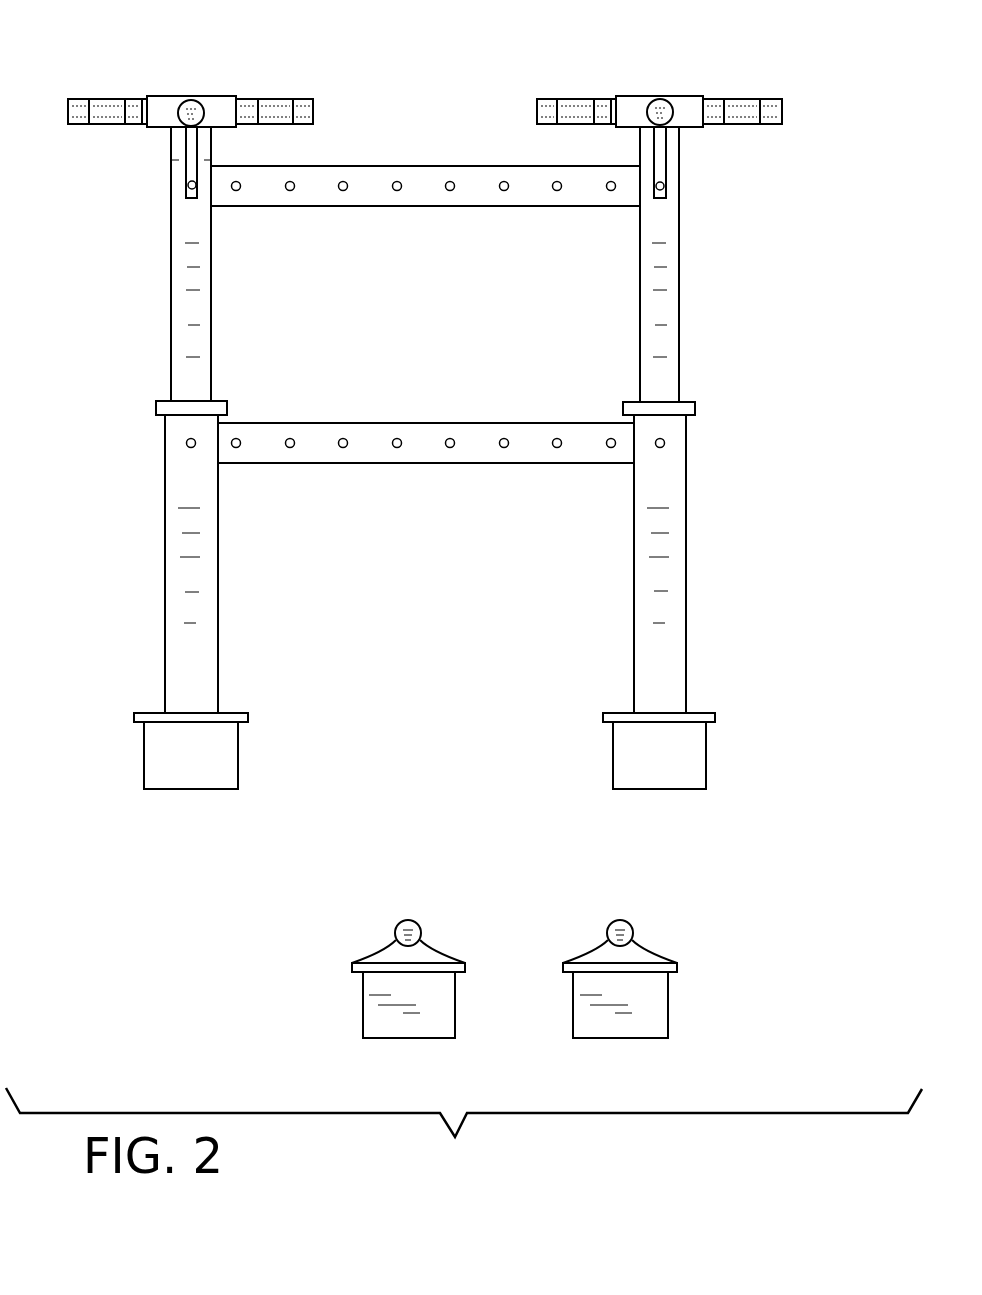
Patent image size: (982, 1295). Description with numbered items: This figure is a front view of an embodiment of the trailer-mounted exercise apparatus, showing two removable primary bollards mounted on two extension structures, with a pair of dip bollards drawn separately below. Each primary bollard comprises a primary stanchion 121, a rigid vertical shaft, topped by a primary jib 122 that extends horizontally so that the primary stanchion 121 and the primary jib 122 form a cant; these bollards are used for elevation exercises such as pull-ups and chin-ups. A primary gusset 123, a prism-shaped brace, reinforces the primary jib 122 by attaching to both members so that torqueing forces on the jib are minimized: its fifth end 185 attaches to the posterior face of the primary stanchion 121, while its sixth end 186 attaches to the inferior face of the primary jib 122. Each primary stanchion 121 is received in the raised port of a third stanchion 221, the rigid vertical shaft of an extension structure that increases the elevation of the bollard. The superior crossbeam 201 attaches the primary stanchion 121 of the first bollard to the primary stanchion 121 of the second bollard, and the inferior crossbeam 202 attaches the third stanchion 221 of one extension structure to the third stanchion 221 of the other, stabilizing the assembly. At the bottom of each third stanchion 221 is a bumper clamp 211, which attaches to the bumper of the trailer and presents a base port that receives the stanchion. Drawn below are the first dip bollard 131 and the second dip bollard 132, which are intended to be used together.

The primary stanchion 121 is at (202, 340).
The primary jib 122 is at (160, 100).
The primary gusset 123 is at (193, 154).
The first dip bollard 131 is at (448, 943).
The second dip bollard 132 is at (652, 932).
The fifth end 185 is at (187, 200).
The sixth end 186 is at (187, 137).
The superior crossbeam 201 is at (418, 197).
The inferior crossbeam 202 is at (391, 455).
The bumper clamp 211 is at (223, 757).
The third stanchion 221 is at (208, 577).